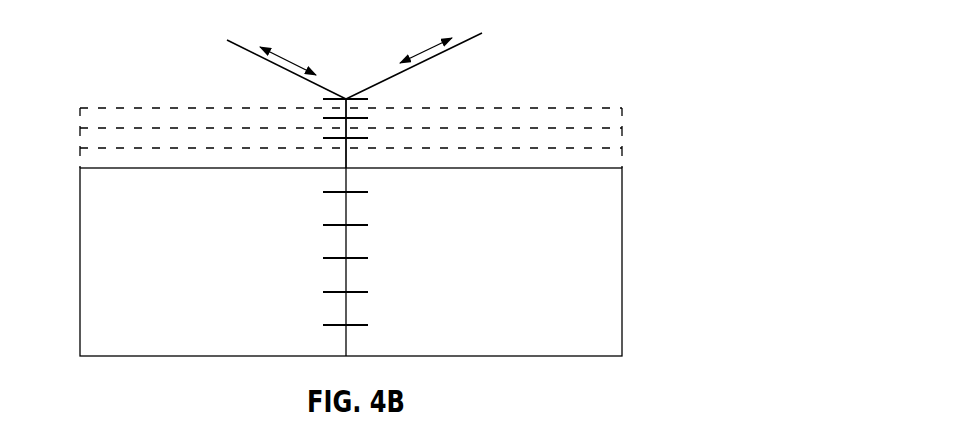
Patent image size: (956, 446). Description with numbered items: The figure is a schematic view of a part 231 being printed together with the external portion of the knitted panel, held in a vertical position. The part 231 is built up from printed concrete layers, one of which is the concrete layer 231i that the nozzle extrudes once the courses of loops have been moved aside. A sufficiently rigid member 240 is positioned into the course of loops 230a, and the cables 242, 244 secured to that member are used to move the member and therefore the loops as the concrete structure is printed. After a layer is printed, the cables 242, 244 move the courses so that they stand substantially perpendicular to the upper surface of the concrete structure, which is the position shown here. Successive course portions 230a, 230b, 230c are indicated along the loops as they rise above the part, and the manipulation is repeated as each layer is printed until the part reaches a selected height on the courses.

The part 231 is at (140, 357).
The concrete layer 231i is at (624, 167).
The cable 242 is at (239, 47).
The cable 244 is at (464, 42).
The sufficiently rigid member 240 is at (348, 97).
The course of loops 230a is at (360, 117).
The second segment 230b is at (358, 137).
The third segment 230c is at (347, 153).